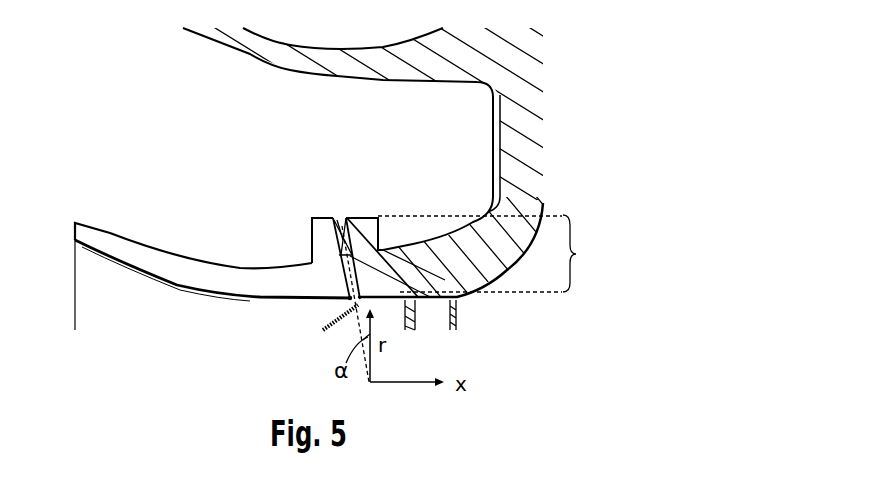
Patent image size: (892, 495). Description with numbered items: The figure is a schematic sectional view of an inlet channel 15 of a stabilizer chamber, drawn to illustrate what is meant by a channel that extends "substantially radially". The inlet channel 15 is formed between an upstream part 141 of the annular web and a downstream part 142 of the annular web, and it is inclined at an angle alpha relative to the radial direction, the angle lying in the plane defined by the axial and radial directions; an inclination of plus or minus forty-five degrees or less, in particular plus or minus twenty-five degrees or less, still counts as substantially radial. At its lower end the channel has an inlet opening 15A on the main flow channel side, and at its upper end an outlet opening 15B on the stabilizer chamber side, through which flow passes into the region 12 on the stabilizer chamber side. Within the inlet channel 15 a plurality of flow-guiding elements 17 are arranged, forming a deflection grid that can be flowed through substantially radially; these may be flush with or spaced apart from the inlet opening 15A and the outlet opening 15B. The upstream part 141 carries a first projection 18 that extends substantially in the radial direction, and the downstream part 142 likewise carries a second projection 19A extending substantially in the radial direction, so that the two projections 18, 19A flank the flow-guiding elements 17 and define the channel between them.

The gas flow path / cavity 12 is at (191, 135).
The upstream part of the annular web 141 is at (153, 263).
The downstream part of the annular web 142 is at (492, 203).
The inlet channel of the stabilizer chamber 15 is at (490, 253).
The inlet opening of the inlet channel on the main flow channel side 15A is at (350, 312).
The outlet opening of the inlet channel on the stabilizer chamber side 15B is at (337, 210).
The flow-guiding elements 17 is at (338, 247).
The first projection which extends substantially in the radial direction 18 is at (313, 219).
The second projection which extends substantially in the radial direction 19A is at (357, 221).